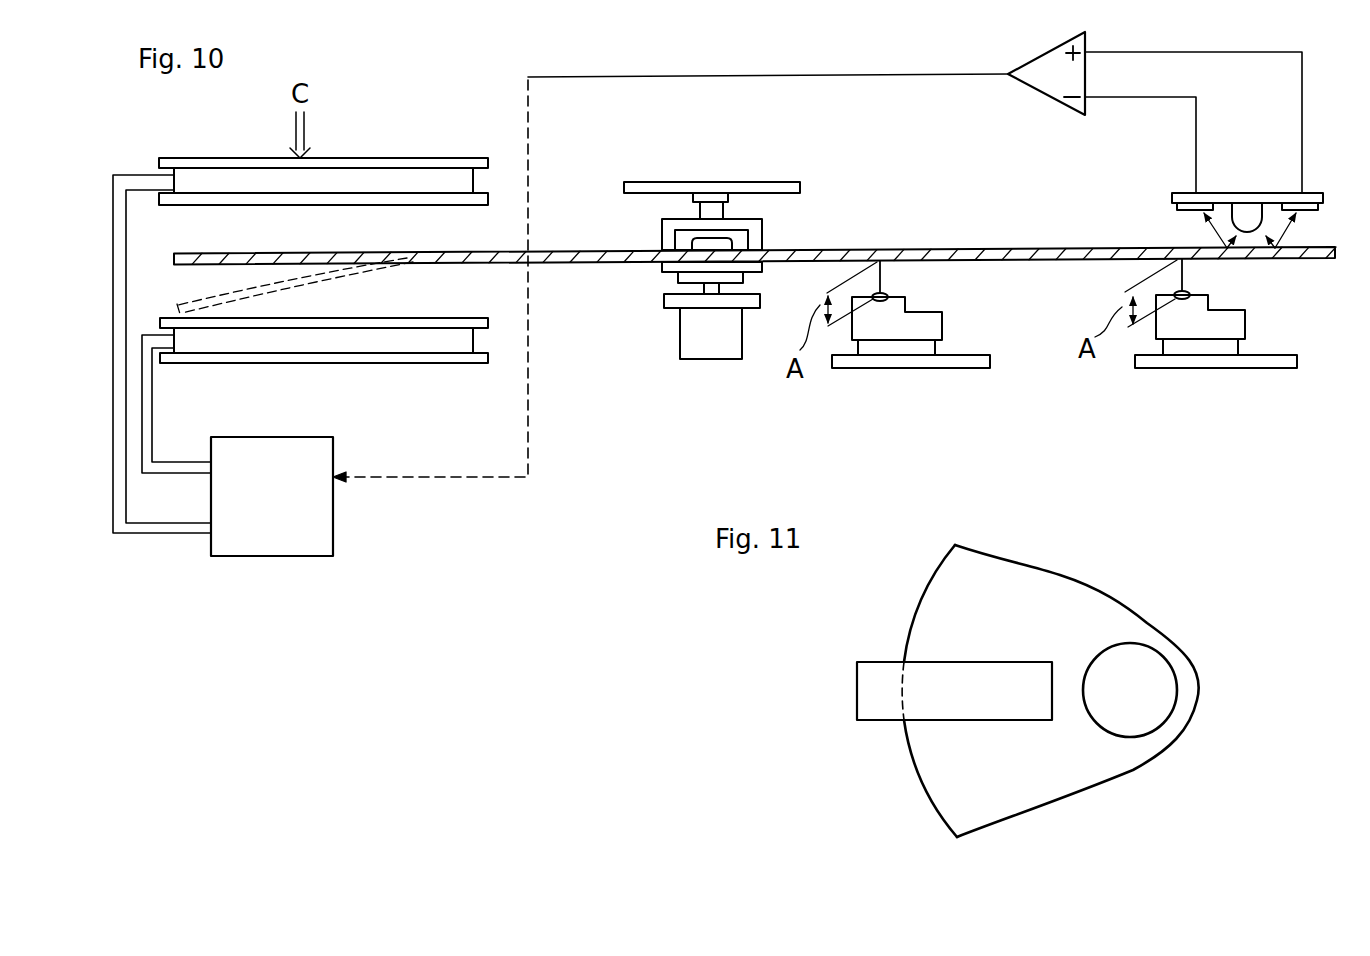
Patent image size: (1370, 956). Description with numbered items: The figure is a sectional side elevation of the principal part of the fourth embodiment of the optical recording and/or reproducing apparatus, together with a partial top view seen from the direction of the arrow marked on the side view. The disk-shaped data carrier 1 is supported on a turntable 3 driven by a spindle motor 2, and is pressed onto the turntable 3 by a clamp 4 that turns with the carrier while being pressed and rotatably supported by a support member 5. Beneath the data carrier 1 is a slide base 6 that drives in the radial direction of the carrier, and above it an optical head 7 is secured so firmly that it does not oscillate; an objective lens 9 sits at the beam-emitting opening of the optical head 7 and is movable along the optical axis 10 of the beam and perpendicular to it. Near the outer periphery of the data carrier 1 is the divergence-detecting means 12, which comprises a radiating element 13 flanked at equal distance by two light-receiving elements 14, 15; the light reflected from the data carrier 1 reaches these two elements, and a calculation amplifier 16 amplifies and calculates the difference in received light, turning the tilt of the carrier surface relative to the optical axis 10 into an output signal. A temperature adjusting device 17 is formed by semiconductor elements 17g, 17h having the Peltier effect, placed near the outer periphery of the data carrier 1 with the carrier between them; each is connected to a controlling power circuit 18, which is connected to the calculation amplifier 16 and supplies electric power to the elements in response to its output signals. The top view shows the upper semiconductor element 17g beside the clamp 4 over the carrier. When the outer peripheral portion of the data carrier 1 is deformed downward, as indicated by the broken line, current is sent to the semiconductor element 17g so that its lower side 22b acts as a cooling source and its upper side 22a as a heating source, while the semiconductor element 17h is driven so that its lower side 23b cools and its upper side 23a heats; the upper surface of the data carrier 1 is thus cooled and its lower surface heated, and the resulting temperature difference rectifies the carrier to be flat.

In FIG. 10, the data carrier 1 is at (568, 262).
In FIG. 11, the data carrier 1 is at (930, 790).
In FIG. 10, the spindle motor 2 is at (707, 359).
In FIG. 10, the turntable 3 is at (662, 268).
In FIG. 10, the clamp 4 is at (762, 227).
In FIG. 11, the clamp 4 is at (1153, 648).
In FIG. 10, the support member 5 is at (762, 182).
In FIG. 10, the slide base 6 is at (937, 368).
In FIG. 10, the optical head 7 is at (942, 327).
In FIG. 10, the objective lens 9 is at (888, 293).
In FIG. 10, the optical axis 10 is at (882, 283).
In FIG. 10, the divergence-detecting means 12 is at (1210, 193).
In FIG. 10, the radiating element 13 is at (1247, 204).
In FIG. 10, the light-receiving element 14 is at (1177, 209).
In FIG. 10, the light-receiving element 15 is at (1323, 207).
In FIG. 10, the calculation amplifier 16 is at (1053, 102).
In FIG. 10, the temperature adjusting device 17 is at (340, 167).
In FIG. 10, the semiconductor element 17g is at (410, 182).
In FIG. 11, the semiconductor element 17g is at (857, 690).
In FIG. 10, the semiconductor element 17h is at (387, 342).
In FIG. 10, the controlling power circuit 18 is at (333, 520).
In FIG. 10, the upper side 22a is at (473, 158).
In FIG. 10, the lower side 22b is at (448, 205).
In FIG. 10, the upper side 23a is at (428, 318).
In FIG. 10, the lower side 23b is at (472, 363).